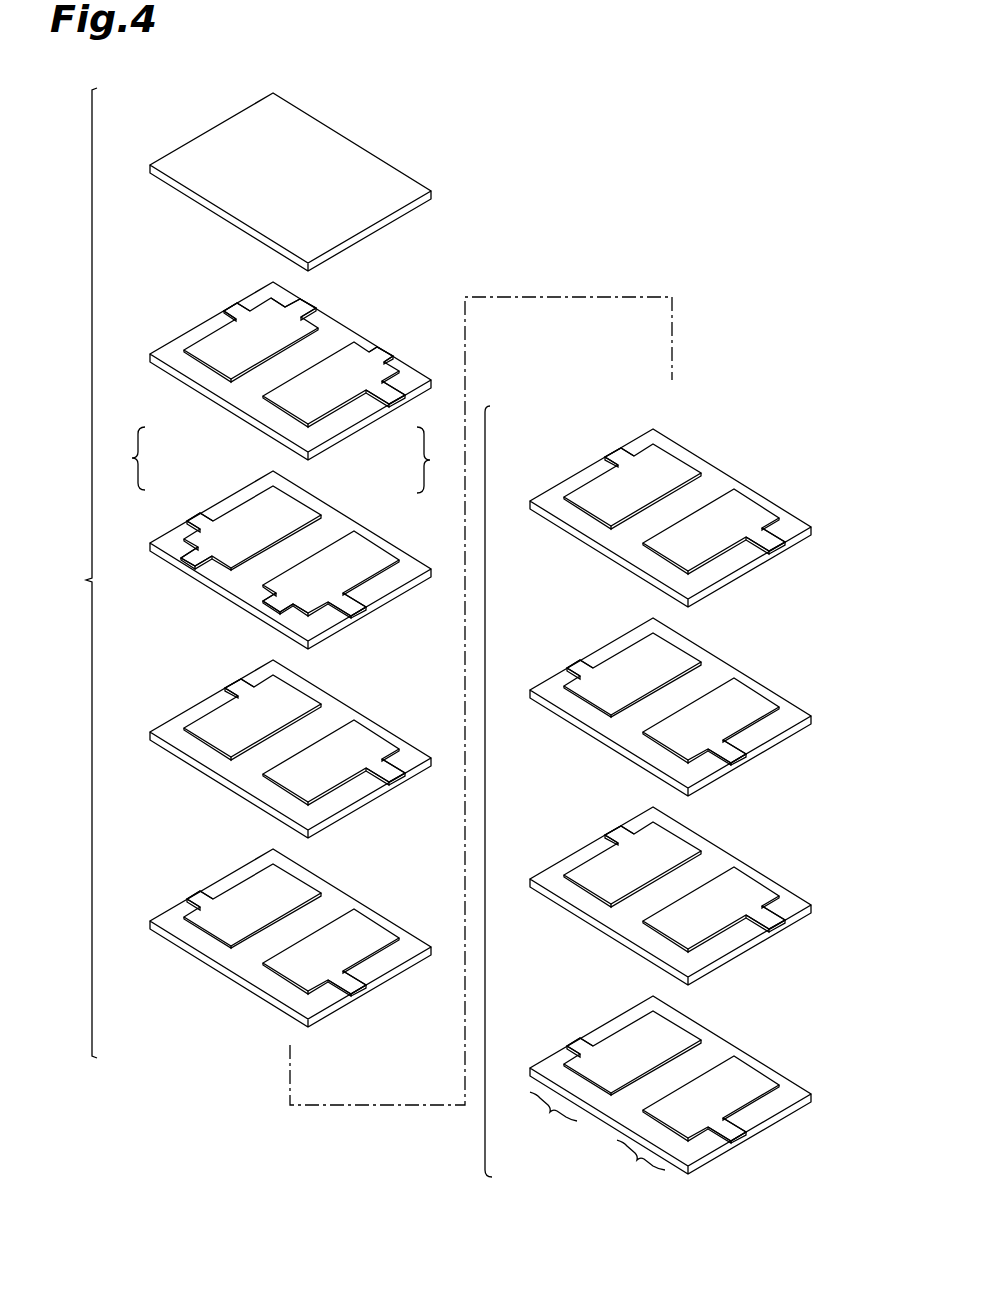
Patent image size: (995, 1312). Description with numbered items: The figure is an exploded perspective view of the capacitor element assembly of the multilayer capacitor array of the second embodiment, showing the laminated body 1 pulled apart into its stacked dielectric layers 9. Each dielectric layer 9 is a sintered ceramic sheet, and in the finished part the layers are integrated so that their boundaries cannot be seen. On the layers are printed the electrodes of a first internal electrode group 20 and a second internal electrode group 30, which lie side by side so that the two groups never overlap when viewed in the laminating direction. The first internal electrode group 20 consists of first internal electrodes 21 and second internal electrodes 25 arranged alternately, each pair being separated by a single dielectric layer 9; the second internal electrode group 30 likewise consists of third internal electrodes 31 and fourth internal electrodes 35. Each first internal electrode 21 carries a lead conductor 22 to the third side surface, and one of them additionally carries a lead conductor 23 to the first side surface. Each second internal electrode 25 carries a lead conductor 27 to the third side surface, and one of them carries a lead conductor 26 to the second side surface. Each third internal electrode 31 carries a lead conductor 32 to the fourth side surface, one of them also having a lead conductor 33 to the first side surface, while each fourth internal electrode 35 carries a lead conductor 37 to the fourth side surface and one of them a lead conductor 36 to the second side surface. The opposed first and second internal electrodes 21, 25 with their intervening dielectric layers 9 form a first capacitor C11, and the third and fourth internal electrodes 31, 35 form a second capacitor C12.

The laminated body 1 is at (81, 573).
The dielectric layer 9 is at (160, 182).
The first internal electrode group 20 is at (124, 458).
The first internal electrode 21 is at (210, 372).
The lead conductor 22 is at (238, 306).
The lead conductor 23 is at (308, 300).
The second internal electrode 25 is at (218, 512).
The lead conductor 26 is at (188, 562).
The lead conductor 27 is at (195, 517).
The second internal electrode group 30 is at (438, 460).
The third internal electrode 31 is at (335, 418).
The lead conductor 32 is at (398, 390).
The lead conductor 33 is at (388, 350).
The fourth internal electrode 35 is at (373, 540).
The lead conductor 36 is at (272, 597).
The lead conductor 37 is at (352, 600).
The first capacitor C11 is at (538, 1115).
The second capacitor C12 is at (626, 1164).